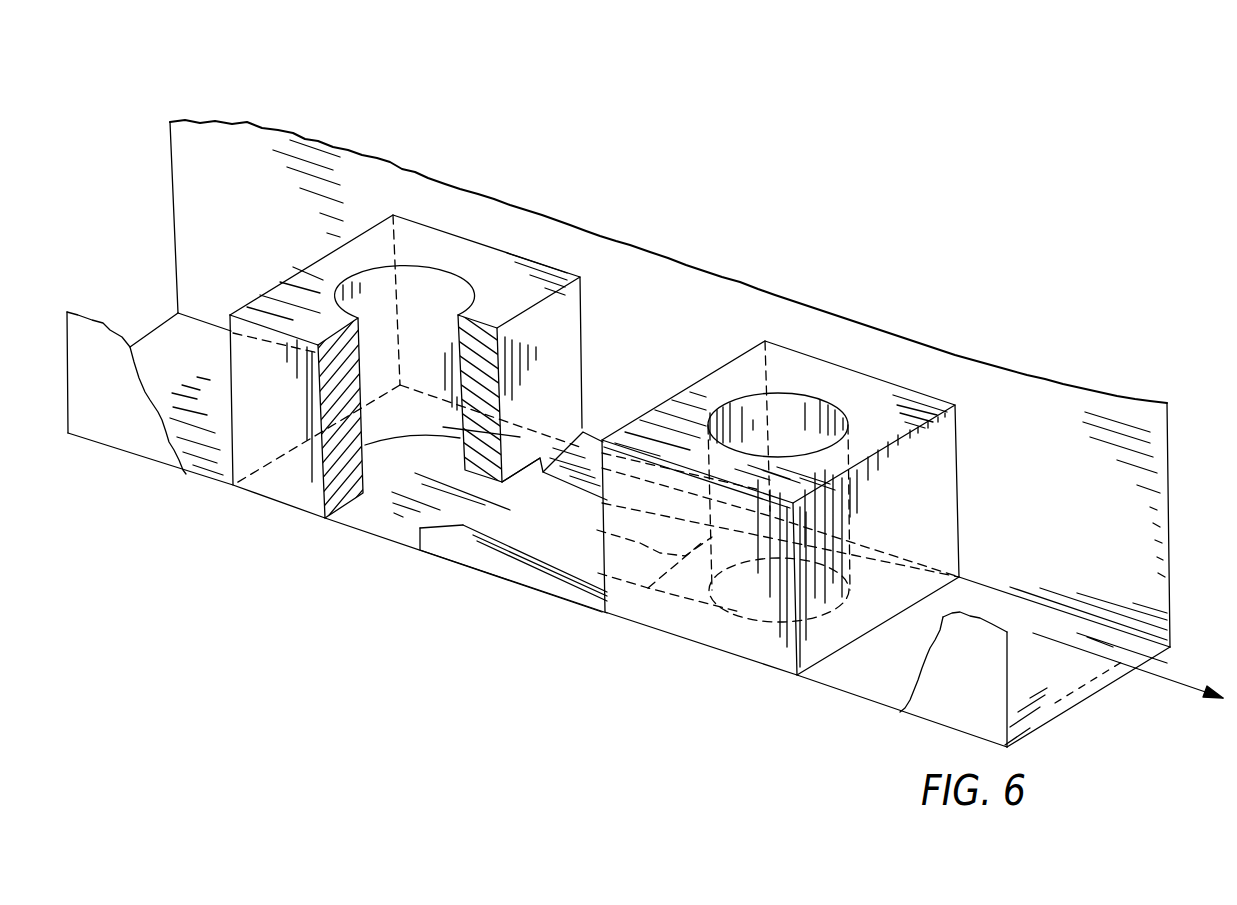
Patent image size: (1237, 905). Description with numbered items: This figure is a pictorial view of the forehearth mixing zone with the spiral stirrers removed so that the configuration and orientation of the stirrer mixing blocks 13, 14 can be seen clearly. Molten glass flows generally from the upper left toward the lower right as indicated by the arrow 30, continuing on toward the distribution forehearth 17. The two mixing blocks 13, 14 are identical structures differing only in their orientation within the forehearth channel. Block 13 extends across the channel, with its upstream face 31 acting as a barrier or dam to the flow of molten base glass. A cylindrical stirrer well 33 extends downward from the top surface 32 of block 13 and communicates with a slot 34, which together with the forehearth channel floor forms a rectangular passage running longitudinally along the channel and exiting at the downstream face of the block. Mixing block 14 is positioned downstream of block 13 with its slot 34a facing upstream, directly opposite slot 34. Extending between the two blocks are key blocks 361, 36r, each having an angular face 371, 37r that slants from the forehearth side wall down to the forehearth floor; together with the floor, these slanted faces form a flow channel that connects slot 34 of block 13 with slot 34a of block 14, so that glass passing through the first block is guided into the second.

The stirrer mixing block 13 is at (565, 368).
The mixing block 14 is at (914, 524).
The distribution forehearth 17 is at (1100, 525).
The arrow 30 is at (1145, 671).
The upstream face 31 is at (292, 276).
The top surface 32 is at (378, 243).
The cylindrical stirrer well 33 is at (431, 278).
The slot 34 is at (514, 486).
The slot 34a is at (612, 531).
The key block 361 is at (599, 436).
The angular face 371 is at (587, 460).
The key block 36r is at (420, 536).
The angular face 37r is at (487, 537).